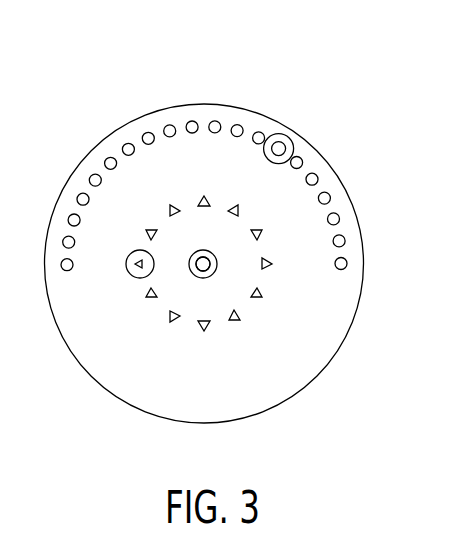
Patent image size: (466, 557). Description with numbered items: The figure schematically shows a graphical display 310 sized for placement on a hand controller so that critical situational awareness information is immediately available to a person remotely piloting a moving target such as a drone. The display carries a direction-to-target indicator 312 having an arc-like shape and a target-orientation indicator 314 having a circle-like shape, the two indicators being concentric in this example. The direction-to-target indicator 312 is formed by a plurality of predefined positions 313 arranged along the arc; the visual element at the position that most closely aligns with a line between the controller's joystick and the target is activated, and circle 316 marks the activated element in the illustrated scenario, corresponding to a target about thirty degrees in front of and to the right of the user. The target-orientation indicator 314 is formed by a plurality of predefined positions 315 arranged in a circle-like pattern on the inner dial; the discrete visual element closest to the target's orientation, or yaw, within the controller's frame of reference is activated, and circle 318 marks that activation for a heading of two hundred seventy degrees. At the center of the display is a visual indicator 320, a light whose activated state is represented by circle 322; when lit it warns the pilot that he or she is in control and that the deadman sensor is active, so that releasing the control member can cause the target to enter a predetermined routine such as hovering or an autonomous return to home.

The graphical display 310 is at (348, 332).
The direction-to-target indicator 312 is at (62, 290).
The predefined positions 313 is at (70, 215).
The target-orientation indicator 314 is at (300, 356).
The predefined positions 315 is at (203, 194).
The circle 316 is at (279, 146).
The circle 318 is at (128, 277).
The visual indicator 320 is at (206, 278).
The circle 322 is at (200, 278).